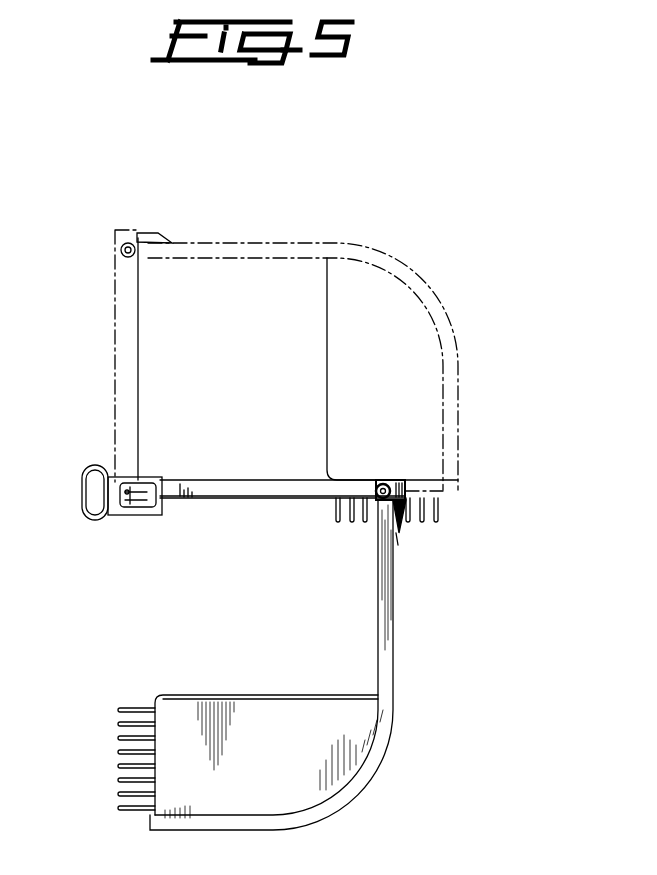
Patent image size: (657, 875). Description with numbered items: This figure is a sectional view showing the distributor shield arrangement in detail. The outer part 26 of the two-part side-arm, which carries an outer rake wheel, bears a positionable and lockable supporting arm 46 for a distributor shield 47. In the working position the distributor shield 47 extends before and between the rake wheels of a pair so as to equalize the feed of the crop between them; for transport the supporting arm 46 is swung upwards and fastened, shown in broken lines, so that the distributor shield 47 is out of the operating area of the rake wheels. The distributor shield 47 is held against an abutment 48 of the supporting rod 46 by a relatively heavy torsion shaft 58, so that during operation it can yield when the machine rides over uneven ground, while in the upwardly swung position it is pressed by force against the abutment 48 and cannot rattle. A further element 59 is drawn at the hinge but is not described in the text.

The outer part of the two-part side-arm 26 is at (80, 490).
The supporting arm 46 is at (133, 443).
The distributor shield 47 is at (415, 385).
The abutment 48 is at (152, 240).
The torsion shaft 58 is at (381, 487).
The hinge block 59 is at (392, 481).